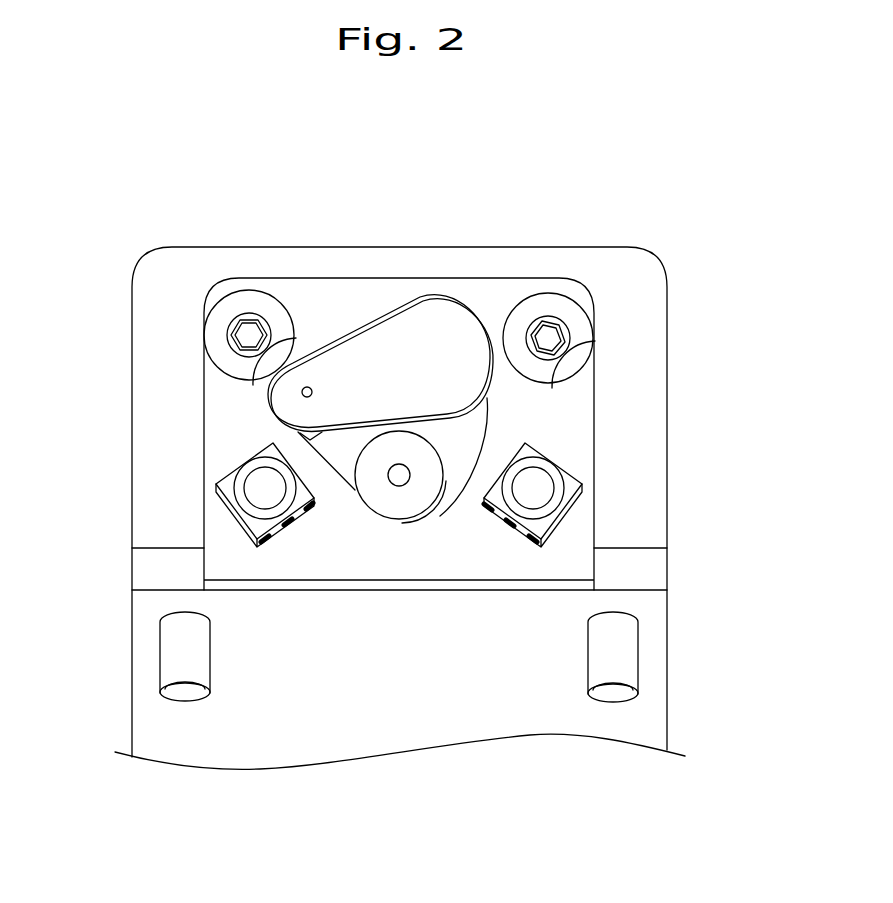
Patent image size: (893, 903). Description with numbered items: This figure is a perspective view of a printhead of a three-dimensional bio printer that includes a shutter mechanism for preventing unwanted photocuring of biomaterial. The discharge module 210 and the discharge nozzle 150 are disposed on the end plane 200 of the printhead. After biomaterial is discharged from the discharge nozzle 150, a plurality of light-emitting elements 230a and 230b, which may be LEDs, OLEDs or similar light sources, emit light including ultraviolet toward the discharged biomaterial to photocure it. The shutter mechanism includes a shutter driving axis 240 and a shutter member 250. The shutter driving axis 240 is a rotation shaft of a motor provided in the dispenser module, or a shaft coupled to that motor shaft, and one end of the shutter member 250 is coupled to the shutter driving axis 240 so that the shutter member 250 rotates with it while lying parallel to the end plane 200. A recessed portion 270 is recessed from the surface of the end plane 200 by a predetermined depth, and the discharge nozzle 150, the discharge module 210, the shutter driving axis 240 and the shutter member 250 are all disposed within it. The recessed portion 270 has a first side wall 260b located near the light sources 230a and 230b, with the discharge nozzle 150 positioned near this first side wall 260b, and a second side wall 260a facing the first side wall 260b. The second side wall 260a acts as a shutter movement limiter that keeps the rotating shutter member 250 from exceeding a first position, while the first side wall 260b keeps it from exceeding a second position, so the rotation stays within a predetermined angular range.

The discharge nozzle 150 is at (393, 483).
The end plane 200 is at (253, 287).
The discharge module 210 is at (433, 455).
The light-emitting element 230a is at (535, 488).
The light-emitting element 230b is at (268, 487).
The shutter driving axis 240 is at (308, 383).
The shutter member 250 is at (433, 342).
The shutter movement limiter (second side wall) 260a is at (473, 330).
The first side wall 260b is at (435, 513).
The recessed portion 270 is at (478, 397).